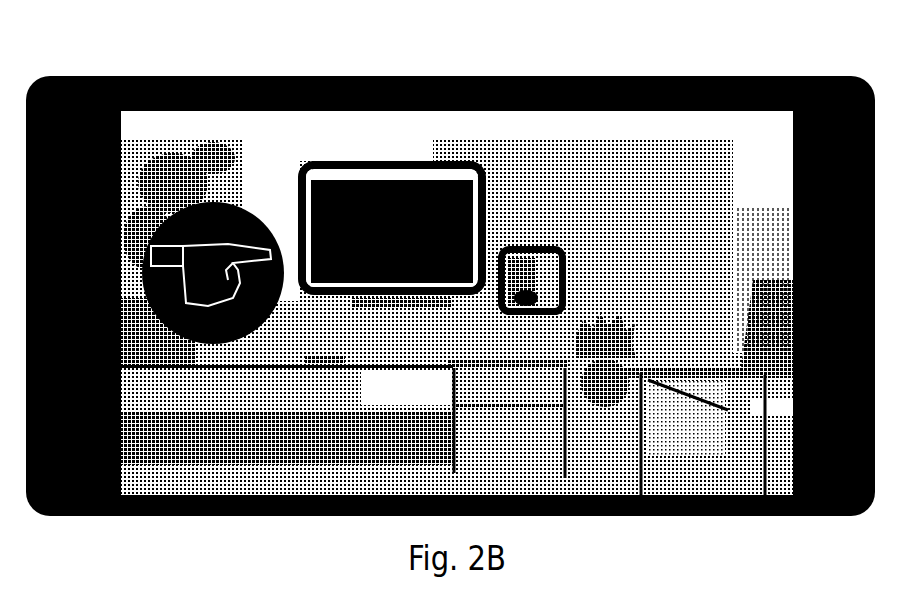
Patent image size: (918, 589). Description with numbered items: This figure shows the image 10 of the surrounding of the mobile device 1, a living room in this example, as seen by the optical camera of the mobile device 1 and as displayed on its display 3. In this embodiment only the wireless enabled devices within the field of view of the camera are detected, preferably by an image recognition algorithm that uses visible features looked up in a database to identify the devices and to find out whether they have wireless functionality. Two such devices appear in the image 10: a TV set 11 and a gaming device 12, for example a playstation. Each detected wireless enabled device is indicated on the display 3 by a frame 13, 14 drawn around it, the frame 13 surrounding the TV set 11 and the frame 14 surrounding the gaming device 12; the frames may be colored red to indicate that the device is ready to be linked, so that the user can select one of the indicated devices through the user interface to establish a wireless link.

The mobile device 1 is at (458, 271).
The display 3 is at (506, 260).
The image 10 is at (457, 260).
The TV set 11 is at (348, 172).
The gaming device 12 is at (505, 265).
The frame 13 is at (349, 158).
The frame 14 is at (587, 169).